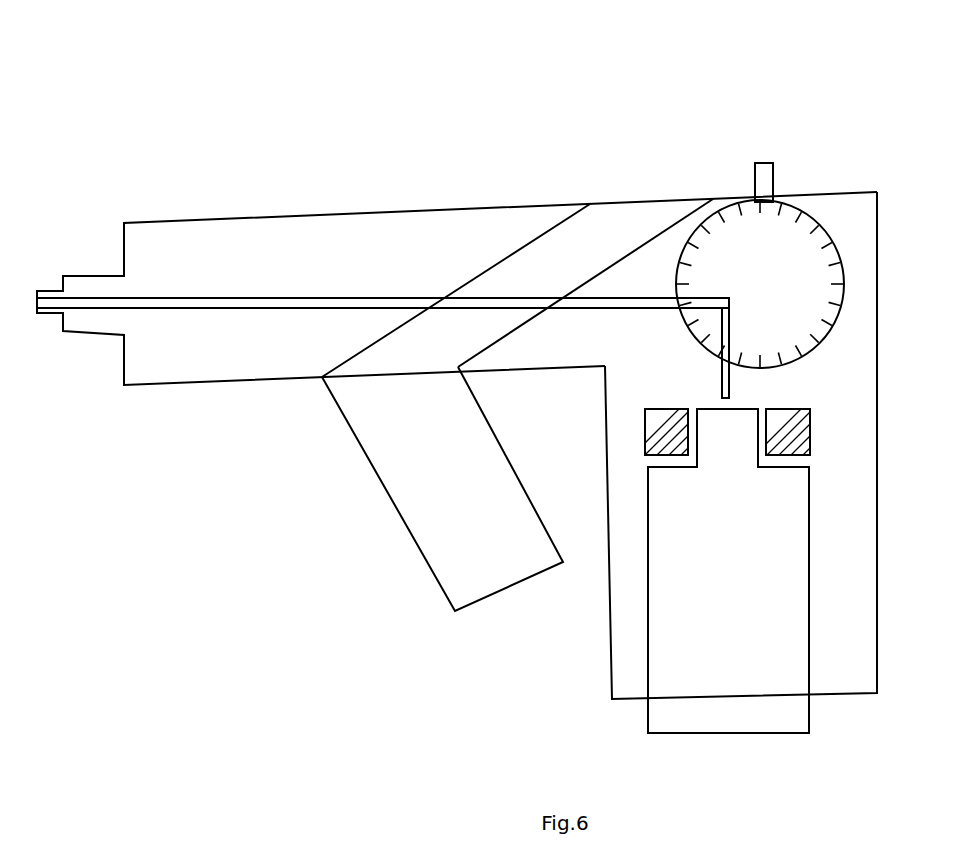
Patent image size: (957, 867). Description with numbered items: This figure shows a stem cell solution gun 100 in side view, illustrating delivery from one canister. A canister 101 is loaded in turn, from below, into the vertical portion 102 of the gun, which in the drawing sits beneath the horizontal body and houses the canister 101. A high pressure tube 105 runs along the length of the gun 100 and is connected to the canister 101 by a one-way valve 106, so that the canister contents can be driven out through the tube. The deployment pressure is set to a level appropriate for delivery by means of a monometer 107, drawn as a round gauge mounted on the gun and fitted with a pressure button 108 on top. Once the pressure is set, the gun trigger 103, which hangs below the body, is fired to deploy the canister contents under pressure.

The stem cell solution gun 100 is at (880, 106).
The canister 101 is at (760, 735).
The vertical portion 102 is at (612, 632).
The gun trigger 103 is at (429, 568).
The high pressure tube 105 is at (298, 296).
The one-way valve 106 is at (720, 384).
The monometer 107 is at (812, 218).
The pressure button 108 is at (763, 163).